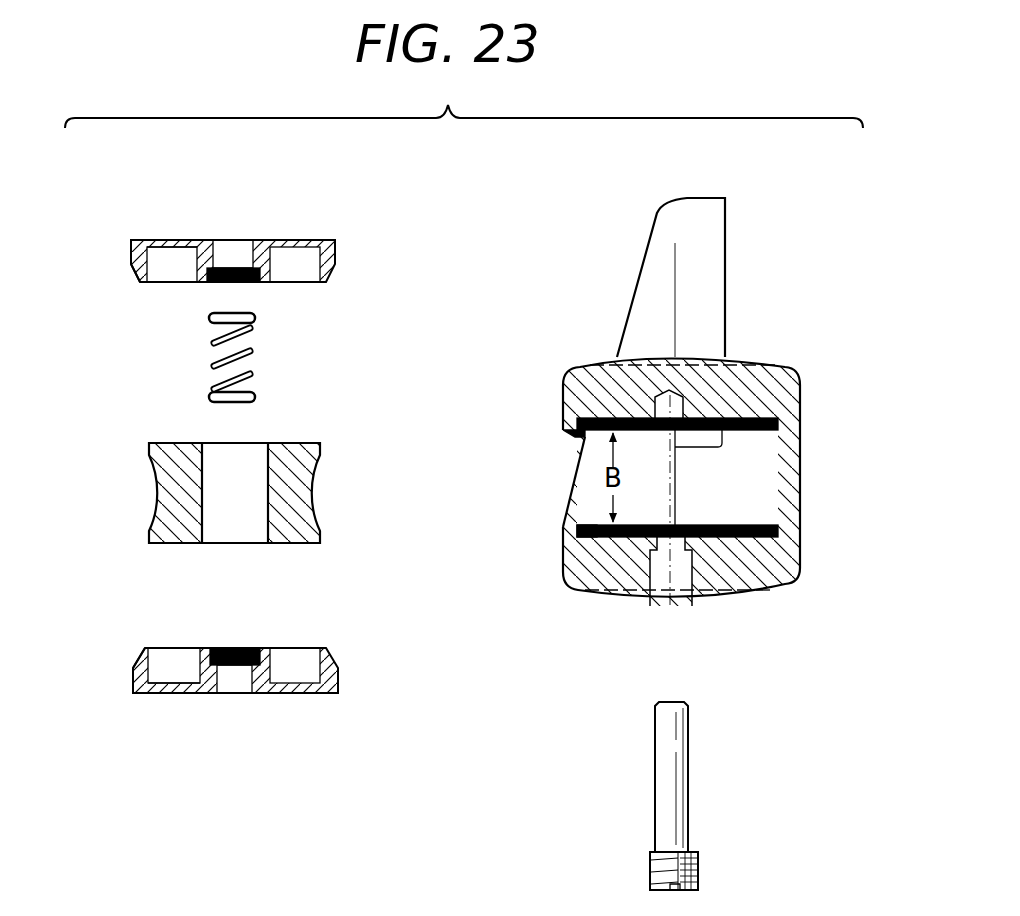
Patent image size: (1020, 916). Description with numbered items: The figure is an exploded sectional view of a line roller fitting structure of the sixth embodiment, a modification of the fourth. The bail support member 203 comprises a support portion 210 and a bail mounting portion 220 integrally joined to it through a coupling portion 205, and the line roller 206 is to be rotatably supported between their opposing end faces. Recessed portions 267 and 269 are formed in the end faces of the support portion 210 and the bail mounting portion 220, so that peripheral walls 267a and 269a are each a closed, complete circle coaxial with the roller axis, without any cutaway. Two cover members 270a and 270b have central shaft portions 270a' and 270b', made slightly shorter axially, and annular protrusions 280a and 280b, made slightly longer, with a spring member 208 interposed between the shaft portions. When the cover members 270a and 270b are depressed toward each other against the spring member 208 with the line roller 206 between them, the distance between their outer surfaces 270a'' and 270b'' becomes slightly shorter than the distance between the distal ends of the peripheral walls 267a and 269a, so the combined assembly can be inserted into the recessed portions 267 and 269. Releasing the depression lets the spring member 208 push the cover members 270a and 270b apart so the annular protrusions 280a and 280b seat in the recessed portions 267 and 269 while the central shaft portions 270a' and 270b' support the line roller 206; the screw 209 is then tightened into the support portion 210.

The bail support member 203 is at (728, 284).
The coupling portion 205 is at (790, 464).
The line roller 206 is at (305, 497).
The spring member 208 is at (253, 356).
The screw 209 is at (678, 783).
The support portion 210 is at (767, 572).
The bail mounting portion 220 is at (775, 380).
The recessed portion 267 is at (778, 530).
The peripheral wall 267a is at (572, 530).
The recessed portion 269 is at (585, 441).
The peripheral wall 269a is at (573, 431).
The cover member 270a is at (277, 228).
The central shaft portion 270a' is at (299, 302).
The outer surface 270a'' is at (190, 211).
The cover member 270b is at (271, 702).
The central shaft portion 270b' is at (304, 632).
The outer surface 270b'' is at (162, 723).
The annular protrusion 280a is at (138, 282).
The annular protrusion 280b is at (140, 652).